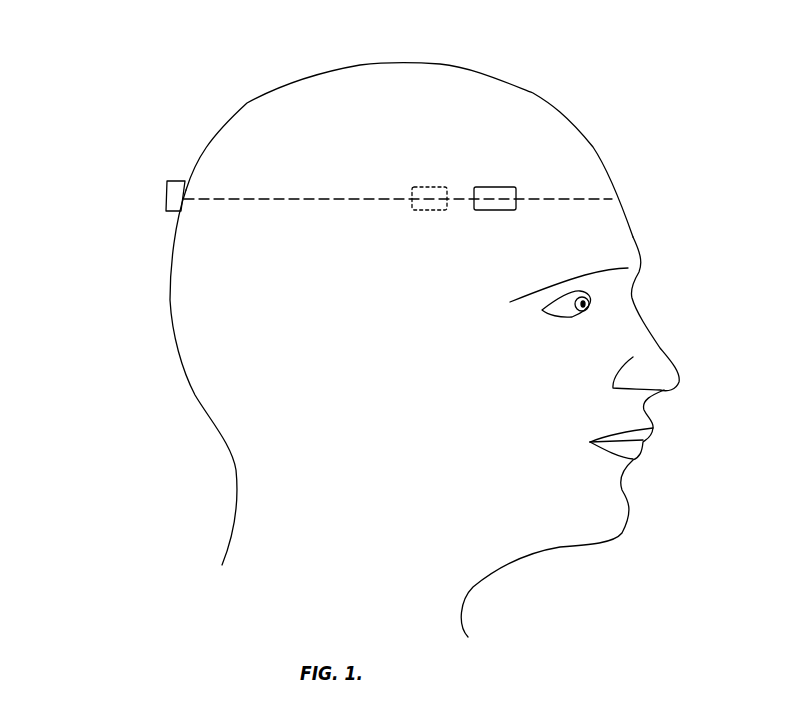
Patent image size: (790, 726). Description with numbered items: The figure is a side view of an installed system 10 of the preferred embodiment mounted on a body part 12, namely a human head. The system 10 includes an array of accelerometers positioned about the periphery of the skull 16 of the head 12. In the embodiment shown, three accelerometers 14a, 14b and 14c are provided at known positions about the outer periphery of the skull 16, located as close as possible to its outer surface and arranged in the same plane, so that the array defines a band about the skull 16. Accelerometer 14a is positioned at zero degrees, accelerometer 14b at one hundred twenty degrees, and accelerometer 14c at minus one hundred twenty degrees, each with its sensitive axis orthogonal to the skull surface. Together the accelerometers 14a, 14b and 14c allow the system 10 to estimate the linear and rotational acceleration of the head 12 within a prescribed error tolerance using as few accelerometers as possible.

The system 10 is at (540, 132).
The body part 12 is at (195, 400).
The accelerometer 14a is at (163, 183).
The accelerometer 14b is at (430, 187).
The accelerometer 14c is at (497, 187).
The skull 16 is at (593, 148).